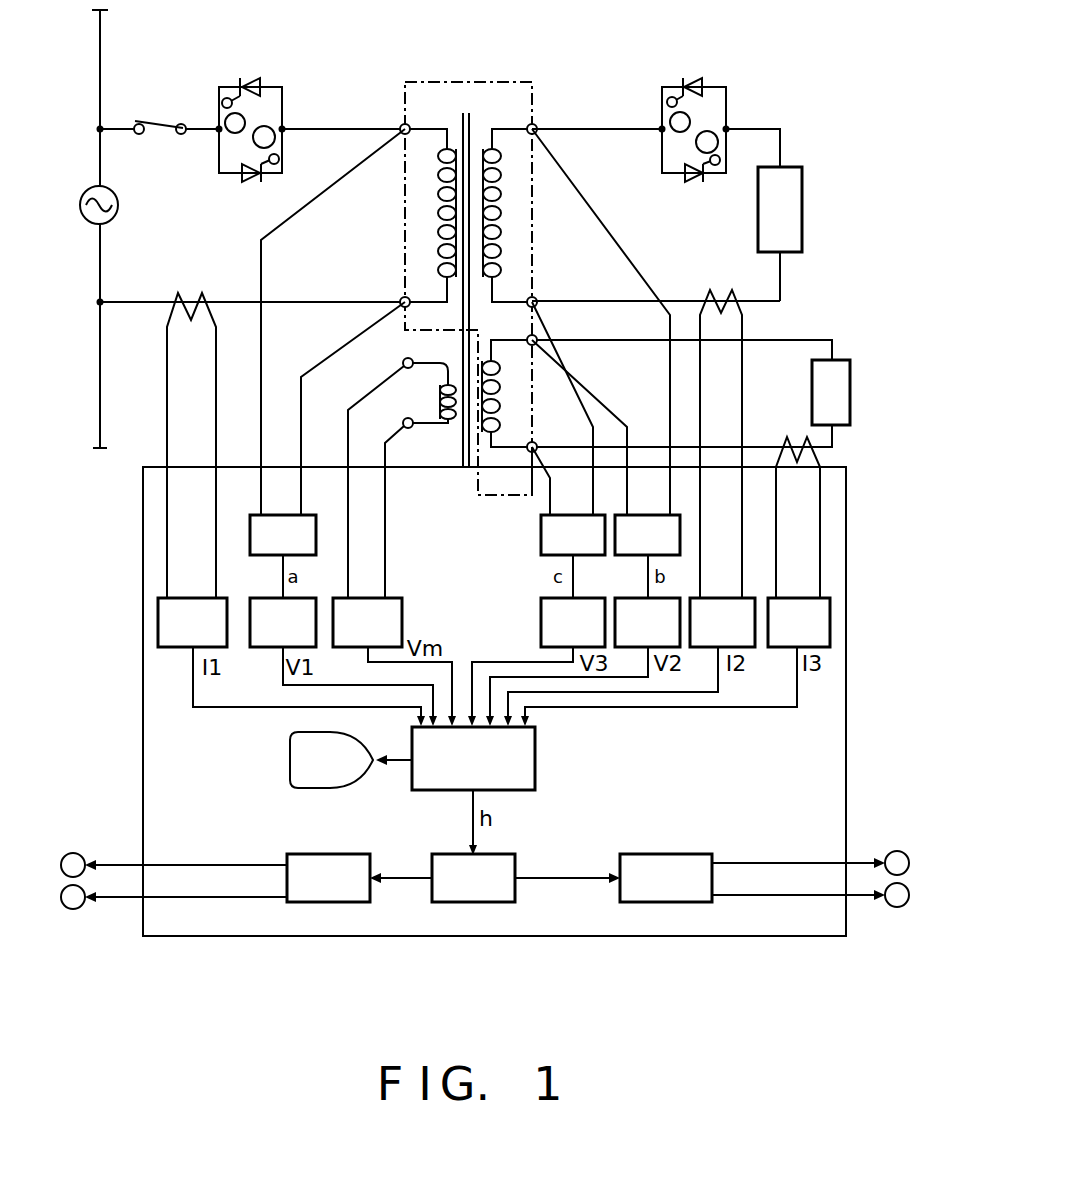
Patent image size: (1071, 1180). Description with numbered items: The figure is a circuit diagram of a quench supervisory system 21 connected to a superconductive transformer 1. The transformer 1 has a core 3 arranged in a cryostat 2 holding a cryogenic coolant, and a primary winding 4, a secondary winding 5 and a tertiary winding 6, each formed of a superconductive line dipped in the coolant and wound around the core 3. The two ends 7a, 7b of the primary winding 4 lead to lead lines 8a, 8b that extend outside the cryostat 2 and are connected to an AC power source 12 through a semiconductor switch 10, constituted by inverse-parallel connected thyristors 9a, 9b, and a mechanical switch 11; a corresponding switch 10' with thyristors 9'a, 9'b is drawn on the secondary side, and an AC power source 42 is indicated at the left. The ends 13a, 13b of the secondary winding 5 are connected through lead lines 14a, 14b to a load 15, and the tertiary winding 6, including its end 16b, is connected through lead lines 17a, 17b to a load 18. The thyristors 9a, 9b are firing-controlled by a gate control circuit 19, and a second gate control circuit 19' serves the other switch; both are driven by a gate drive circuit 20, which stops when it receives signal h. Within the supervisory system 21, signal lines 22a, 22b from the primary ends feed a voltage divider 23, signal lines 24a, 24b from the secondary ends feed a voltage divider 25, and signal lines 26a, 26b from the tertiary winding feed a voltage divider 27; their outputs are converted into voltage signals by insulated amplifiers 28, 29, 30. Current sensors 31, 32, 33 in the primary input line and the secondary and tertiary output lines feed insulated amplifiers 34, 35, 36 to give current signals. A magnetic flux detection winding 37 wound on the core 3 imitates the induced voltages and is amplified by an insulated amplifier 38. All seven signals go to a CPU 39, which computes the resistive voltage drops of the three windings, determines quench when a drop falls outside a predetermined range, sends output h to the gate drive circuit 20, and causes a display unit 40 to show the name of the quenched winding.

The superconductive transformer 1 is at (494, 74).
The cryostat 2 is at (413, 82).
The core 3 is at (472, 126).
The primary winding 4 is at (438, 210).
The secondary winding 5 is at (498, 210).
The tertiary winding 6 is at (503, 409).
The end of primary winding 7a is at (399, 123).
The end of primary winding 7b is at (401, 296).
The lead line 8a is at (316, 125).
The lead line 8b is at (297, 300).
The thyristor 9a is at (246, 78).
The thyristor 9b is at (251, 181).
The thyristor 9'a is at (692, 71).
The thyristor 9'b is at (689, 184).
The semiconductor switch 10 is at (226, 133).
The semiconductor switch 10' is at (672, 133).
The mechanical switch 11 is at (153, 119).
The AC power source 12 is at (109, 196).
The end of secondary winding 13a is at (537, 124).
The end of secondary winding 13b is at (543, 295).
The lead line 14a is at (612, 125).
The lead line 14b is at (672, 299).
The load 15 is at (758, 235).
The end of tertiary winding 16b is at (515, 415).
The lead line 17a is at (790, 338).
The lead line 17b is at (765, 445).
The load 18 is at (812, 383).
The gate control circuit 19 is at (215, 861).
The gate control circuit 19' is at (764, 860).
The gate drive circuit 20 is at (511, 854).
The supervisory system 21 is at (436, 574).
The signal line 22a is at (343, 181).
The signal line 22b is at (316, 366).
The voltage divider 23 is at (279, 513).
The signal line 24a is at (583, 200).
The signal line 24b is at (601, 400).
The voltage divider 25 is at (652, 513).
The signal line 26a is at (537, 446).
The signal line 26b is at (548, 495).
The voltage divider 27 is at (566, 513).
The insulated amplifier 28 is at (272, 598).
The insulated amplifier 29 is at (641, 596).
The insulated amplifier 30 is at (541, 625).
The current sensor 31 is at (184, 293).
The current sensor 32 is at (714, 289).
The current sensor 33 is at (798, 467).
The insulated amplifier 34 is at (190, 595).
The insulated amplifier 35 is at (717, 595).
The insulated amplifier 36 is at (794, 595).
The magnetic flux detection winding 37 is at (442, 398).
The insulated amplifier 38 is at (365, 595).
The CPU 39 is at (535, 755).
The display unit 40 is at (290, 760).
The AC power source 42 is at (100, 380).